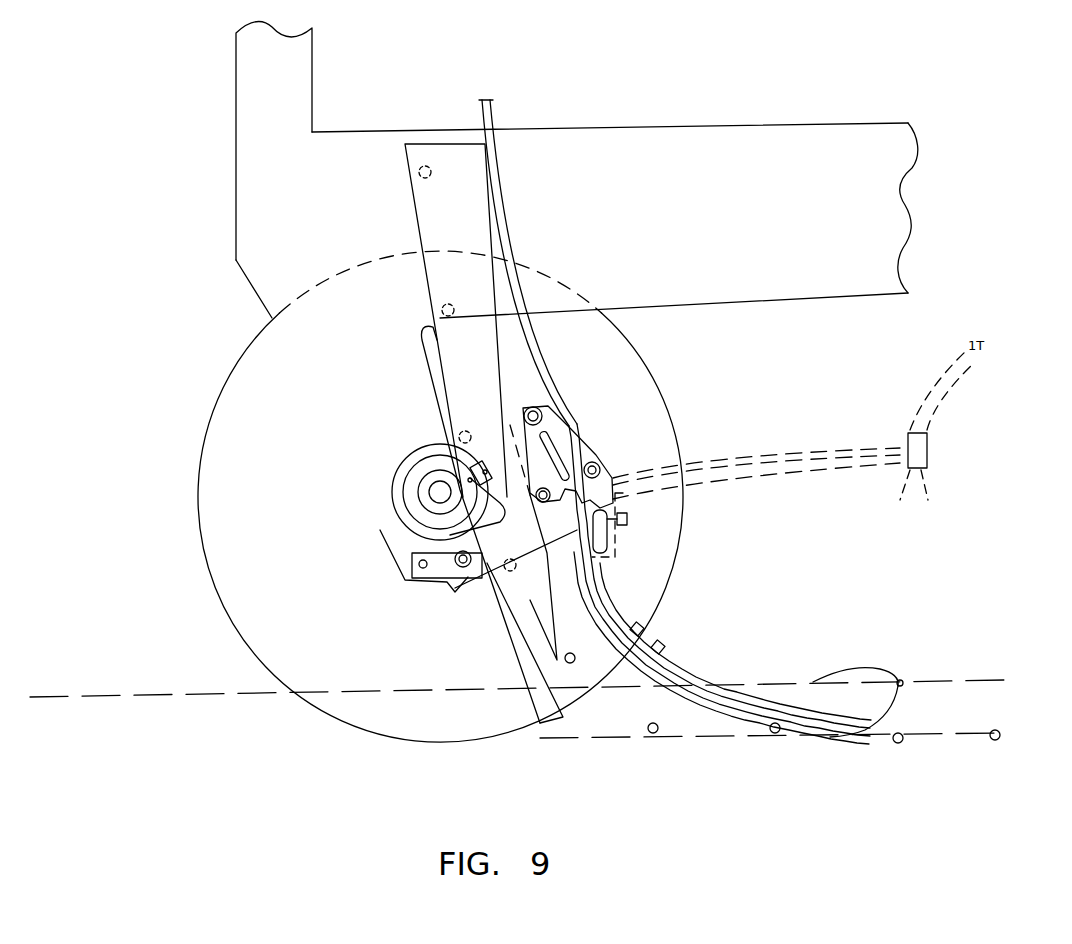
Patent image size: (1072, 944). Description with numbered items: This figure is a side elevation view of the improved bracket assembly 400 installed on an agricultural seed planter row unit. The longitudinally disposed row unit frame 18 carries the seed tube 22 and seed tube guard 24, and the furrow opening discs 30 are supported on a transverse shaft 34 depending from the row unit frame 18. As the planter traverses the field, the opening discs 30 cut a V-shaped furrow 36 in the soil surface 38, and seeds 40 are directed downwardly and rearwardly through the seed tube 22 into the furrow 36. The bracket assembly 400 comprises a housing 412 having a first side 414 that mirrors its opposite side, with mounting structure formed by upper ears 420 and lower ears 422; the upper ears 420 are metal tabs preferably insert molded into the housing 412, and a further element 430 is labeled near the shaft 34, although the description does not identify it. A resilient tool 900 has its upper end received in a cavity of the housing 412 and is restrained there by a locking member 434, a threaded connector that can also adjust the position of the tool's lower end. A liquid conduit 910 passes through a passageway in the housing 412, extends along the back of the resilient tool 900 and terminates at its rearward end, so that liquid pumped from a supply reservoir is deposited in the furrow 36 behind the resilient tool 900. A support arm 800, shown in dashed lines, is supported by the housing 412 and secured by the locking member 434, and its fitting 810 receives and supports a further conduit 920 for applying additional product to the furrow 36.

The row unit frame 18 is at (758, 130).
The seed tube 22 is at (462, 368).
The seed tube guard 24 is at (493, 643).
The furrow opening discs 30 is at (215, 527).
The transverse shaft 34 is at (438, 494).
The furrow 36 is at (705, 725).
The soil surface 38 is at (90, 697).
The seeds 40 is at (412, 172).
The improved bracket assembly 400 is at (590, 445).
The housing 412 is at (540, 423).
The first side 414 is at (540, 437).
The upper ears 420 is at (422, 483).
The lower ears 422 is at (460, 567).
The tab 430 is at (462, 472).
The locking member 434 is at (622, 523).
The support arm 800 is at (866, 447).
The fitting 810 is at (930, 441).
The resilient tool 900 is at (862, 698).
The liquid conduit 910 is at (495, 115).
The conduit 920 is at (968, 385).